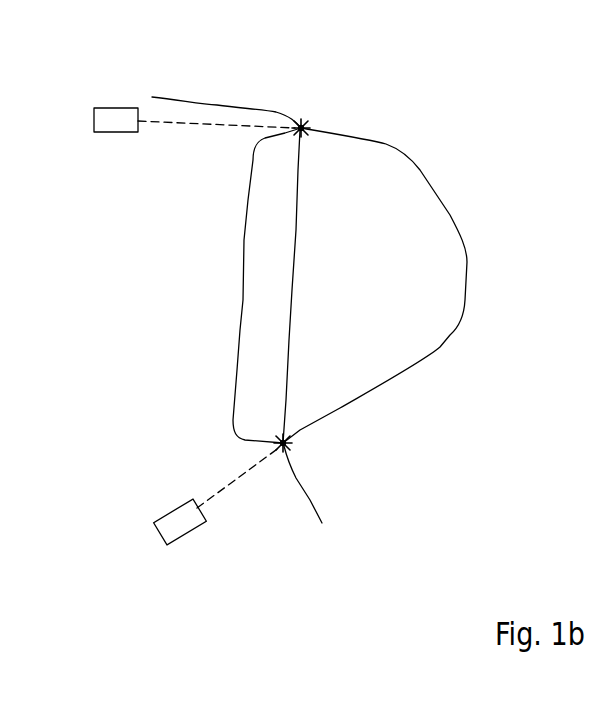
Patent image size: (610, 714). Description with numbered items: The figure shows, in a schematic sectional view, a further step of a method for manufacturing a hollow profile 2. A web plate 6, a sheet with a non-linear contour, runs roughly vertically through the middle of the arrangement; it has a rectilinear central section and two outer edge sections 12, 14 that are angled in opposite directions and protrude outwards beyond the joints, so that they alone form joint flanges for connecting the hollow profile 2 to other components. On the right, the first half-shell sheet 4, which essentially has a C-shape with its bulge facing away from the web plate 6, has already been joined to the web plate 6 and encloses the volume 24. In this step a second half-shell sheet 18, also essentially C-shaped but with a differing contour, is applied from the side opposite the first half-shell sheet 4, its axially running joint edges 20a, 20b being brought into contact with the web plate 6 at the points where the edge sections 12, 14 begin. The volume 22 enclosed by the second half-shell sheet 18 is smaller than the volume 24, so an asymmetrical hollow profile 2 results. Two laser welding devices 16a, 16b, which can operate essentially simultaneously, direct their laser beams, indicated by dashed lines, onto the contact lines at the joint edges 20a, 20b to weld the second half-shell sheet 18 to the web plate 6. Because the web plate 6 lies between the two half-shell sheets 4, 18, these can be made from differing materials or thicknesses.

The hollow profile 2 is at (493, 126).
The first half-shell sheet 4 is at (420, 362).
The web plate 6 is at (298, 340).
The outer edge section 12 is at (217, 103).
The outer edge section 14 is at (305, 493).
The laser welding device 16a is at (113, 123).
The laser welding device 16b is at (178, 522).
The second half-shell sheet 18 is at (240, 335).
The joint edge 20a is at (306, 125).
The joint edge 20b is at (292, 448).
The volume 22 is at (283, 296).
The volume 24 is at (391, 296).